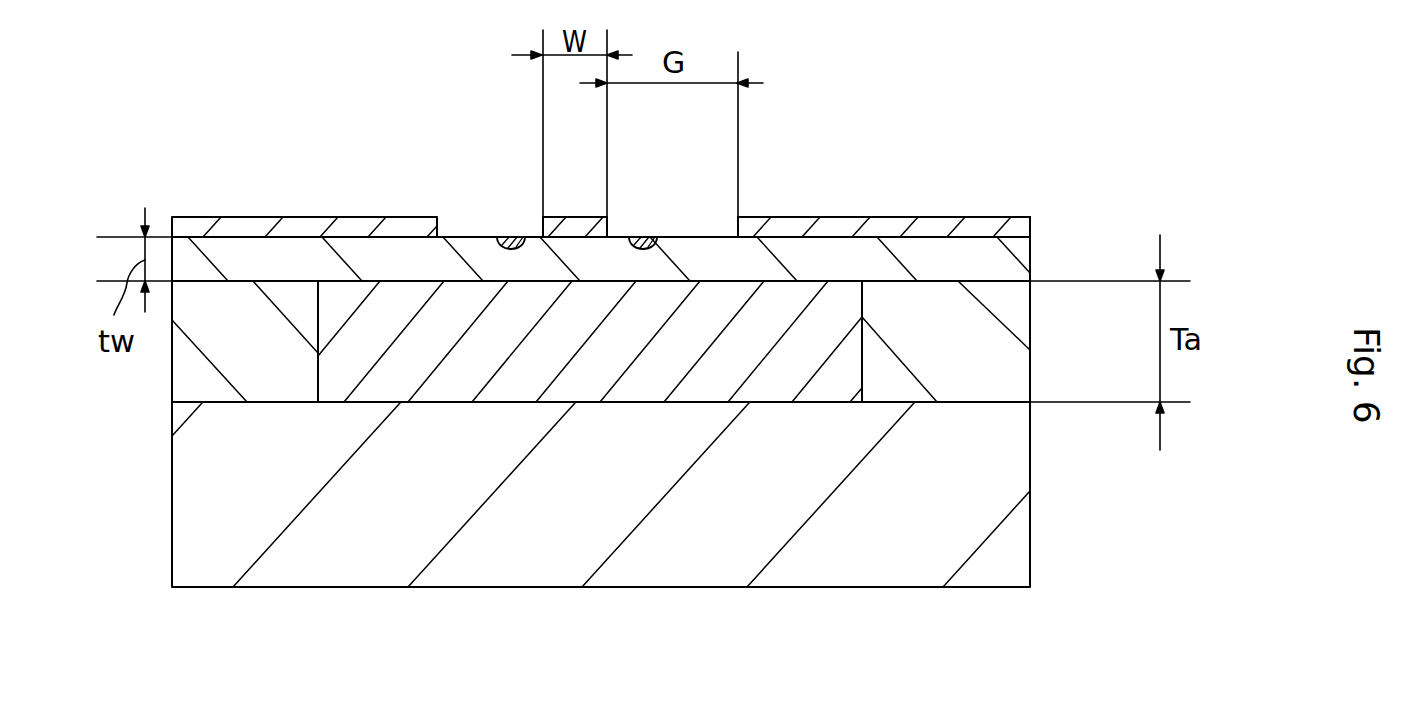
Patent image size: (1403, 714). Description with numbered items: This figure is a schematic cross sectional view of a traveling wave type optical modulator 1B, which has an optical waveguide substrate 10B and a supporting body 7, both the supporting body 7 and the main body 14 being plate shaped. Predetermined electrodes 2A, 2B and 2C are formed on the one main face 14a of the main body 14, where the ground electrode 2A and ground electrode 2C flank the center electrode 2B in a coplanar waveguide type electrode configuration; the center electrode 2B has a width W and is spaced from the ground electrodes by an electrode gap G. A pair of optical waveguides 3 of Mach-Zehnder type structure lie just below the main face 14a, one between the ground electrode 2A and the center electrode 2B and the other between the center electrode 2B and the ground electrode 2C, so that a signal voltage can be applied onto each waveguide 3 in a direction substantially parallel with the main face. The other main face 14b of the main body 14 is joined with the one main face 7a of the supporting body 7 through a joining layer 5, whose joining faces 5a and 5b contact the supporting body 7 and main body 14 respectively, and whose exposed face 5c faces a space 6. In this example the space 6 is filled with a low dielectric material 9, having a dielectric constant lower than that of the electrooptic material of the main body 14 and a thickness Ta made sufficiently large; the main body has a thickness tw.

The optical modulator 1B is at (1031, 189).
The optical waveguide substrate 10B is at (1041, 233).
The ground electrode 2A is at (288, 218).
The center electrode 2B is at (565, 217).
The ground electrode 2C is at (783, 228).
The optical waveguide 3 is at (504, 236).
The joining layer 5 is at (1018, 368).
The joining face 5a is at (923, 405).
The joining face 5b is at (1024, 288).
The exposed face 5c is at (318, 372).
The space 6 is at (617, 400).
The supporting body 7 is at (1046, 477).
The one main face of the supporting body 7a is at (970, 400).
The low dielectric material 9 is at (683, 320).
The main body 14 is at (1047, 260).
The one main face of the main body 14a is at (875, 237).
The other main face of the main body 14b is at (946, 281).